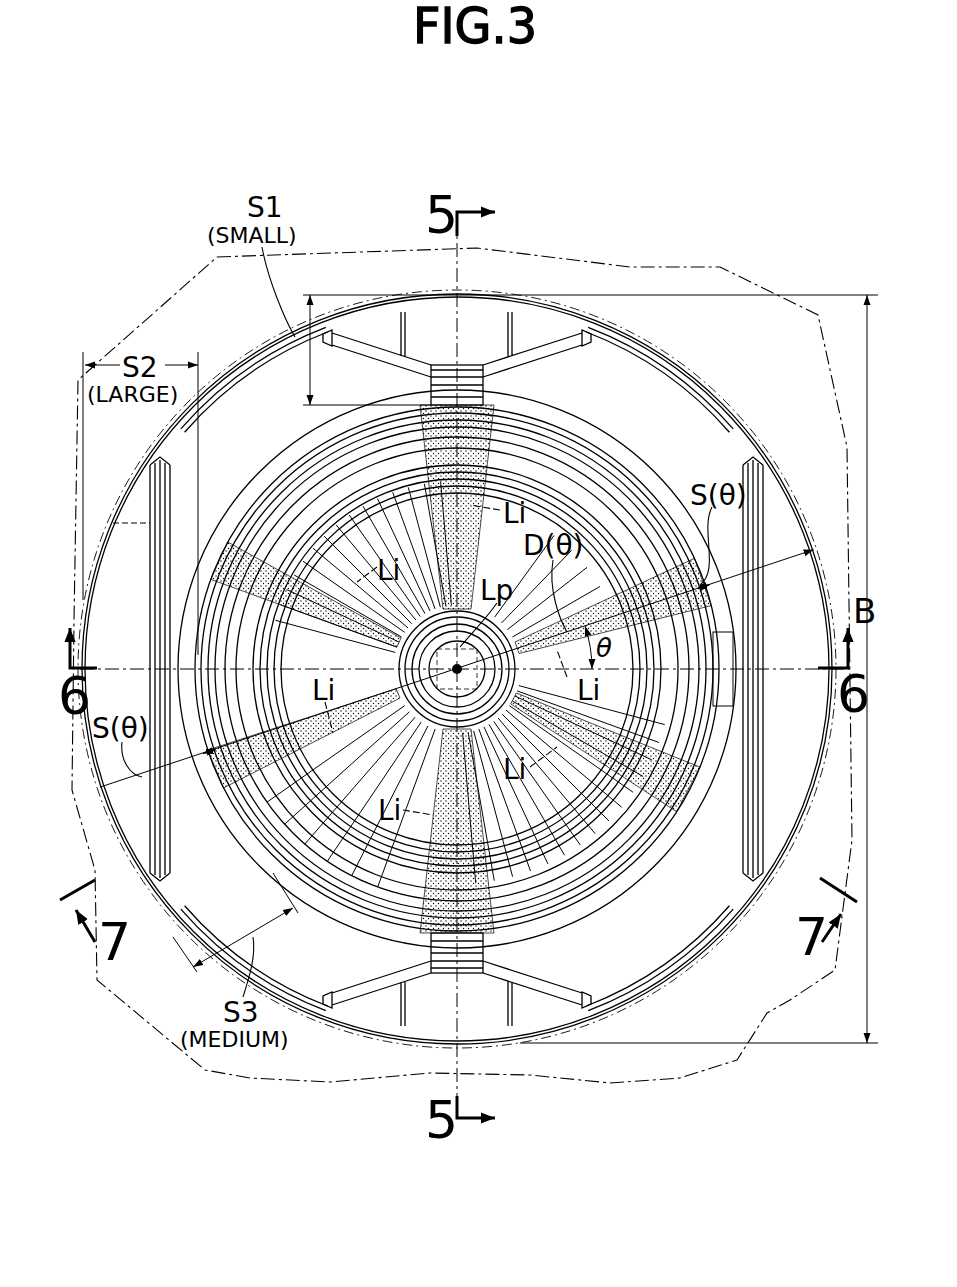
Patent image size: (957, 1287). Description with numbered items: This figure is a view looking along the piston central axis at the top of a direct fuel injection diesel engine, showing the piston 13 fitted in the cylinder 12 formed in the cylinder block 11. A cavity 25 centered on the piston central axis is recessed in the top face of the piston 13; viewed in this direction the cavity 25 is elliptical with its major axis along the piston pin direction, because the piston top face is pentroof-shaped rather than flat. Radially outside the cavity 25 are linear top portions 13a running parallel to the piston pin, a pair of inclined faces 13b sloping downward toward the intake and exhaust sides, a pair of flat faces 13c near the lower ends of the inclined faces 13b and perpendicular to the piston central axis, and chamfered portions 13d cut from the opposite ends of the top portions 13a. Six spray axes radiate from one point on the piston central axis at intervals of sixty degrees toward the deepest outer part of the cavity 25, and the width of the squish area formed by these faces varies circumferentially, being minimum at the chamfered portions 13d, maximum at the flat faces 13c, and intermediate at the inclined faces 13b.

The cylinder block 11 is at (630, 267).
The cylinder 12 is at (612, 372).
The piston 13 is at (693, 370).
The top portions 13a is at (473, 386).
The inclined faces 13b is at (265, 400).
The flat faces 13c is at (127, 553).
The chamfered portions 13d is at (480, 322).
The cavity 25 is at (421, 781).